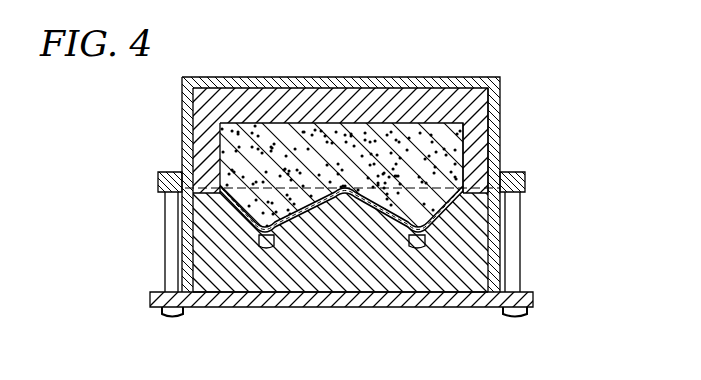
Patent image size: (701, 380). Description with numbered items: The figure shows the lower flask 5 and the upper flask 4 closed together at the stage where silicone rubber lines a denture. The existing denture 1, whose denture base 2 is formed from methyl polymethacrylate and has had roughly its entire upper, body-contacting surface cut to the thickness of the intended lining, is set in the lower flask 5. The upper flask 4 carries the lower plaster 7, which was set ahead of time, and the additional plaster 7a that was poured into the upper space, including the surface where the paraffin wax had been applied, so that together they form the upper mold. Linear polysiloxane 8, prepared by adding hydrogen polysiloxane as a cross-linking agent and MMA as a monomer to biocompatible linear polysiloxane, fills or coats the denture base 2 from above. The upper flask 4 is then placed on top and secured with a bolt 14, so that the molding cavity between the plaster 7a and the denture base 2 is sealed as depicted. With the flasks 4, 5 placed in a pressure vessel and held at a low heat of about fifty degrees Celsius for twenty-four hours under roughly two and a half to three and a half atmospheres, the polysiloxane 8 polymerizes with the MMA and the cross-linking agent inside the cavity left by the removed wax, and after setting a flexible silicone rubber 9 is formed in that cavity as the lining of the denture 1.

The denture 1 is at (248, 231).
The denture base 2 is at (246, 221).
The upper flask 4 is at (500, 90).
The lower flask 5 is at (522, 256).
The lower plaster 7 is at (212, 109).
The plaster 7a is at (496, 142).
The linear polysiloxane 8 is at (223, 287).
The silicone rubber 9 is at (348, 188).
The bolt 14 is at (522, 213).